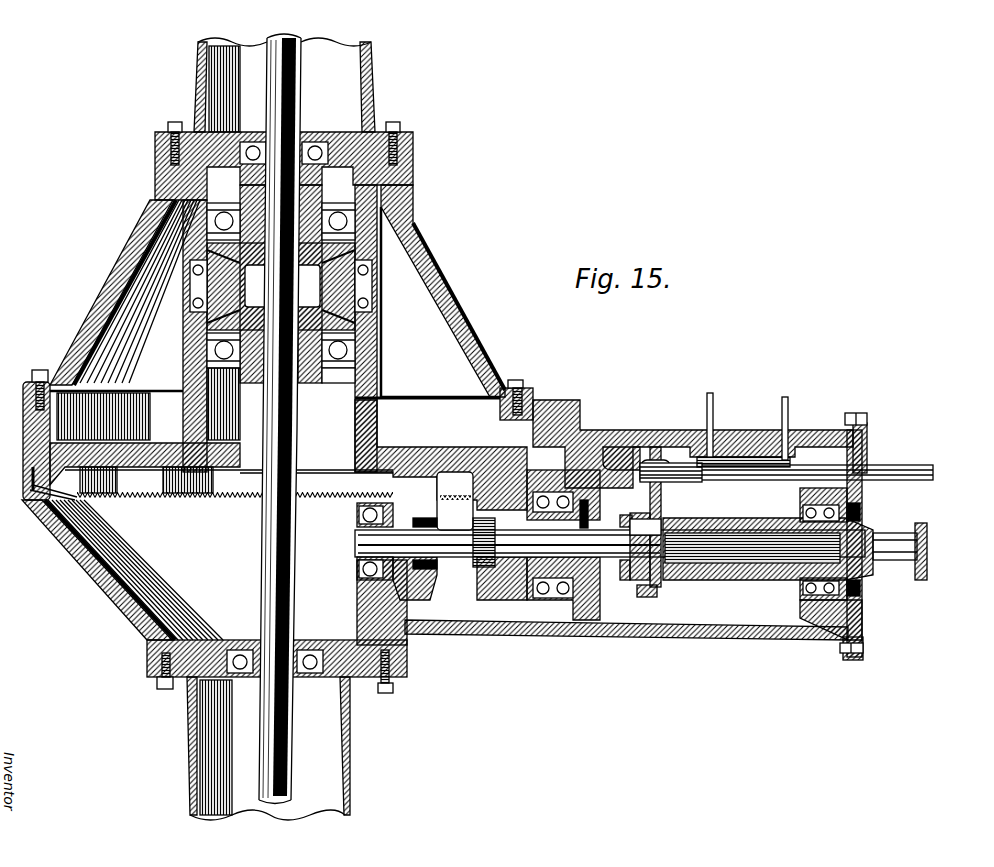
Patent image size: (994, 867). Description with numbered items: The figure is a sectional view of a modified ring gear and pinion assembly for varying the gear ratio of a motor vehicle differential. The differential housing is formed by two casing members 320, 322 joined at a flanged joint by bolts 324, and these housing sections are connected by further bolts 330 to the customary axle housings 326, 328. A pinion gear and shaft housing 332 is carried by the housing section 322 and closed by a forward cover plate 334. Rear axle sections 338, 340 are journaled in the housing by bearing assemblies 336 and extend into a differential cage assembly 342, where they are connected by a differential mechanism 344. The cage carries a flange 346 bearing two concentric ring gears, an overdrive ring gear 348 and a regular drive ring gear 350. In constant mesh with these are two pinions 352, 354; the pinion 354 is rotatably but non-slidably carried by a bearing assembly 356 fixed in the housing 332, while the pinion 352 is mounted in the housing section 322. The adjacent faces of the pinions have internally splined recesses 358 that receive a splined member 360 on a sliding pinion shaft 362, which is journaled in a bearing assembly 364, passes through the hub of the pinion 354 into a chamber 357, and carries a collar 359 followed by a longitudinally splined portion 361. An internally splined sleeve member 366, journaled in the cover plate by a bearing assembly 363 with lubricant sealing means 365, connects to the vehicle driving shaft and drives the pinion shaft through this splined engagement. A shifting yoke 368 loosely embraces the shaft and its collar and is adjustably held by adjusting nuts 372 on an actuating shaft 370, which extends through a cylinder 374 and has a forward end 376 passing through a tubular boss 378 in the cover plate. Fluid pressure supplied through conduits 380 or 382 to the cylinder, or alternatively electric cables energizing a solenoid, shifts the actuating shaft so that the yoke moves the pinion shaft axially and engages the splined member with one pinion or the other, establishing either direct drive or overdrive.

The casing member 320 is at (456, 298).
The casing member 322 is at (120, 603).
The bolts 324 is at (513, 387).
The axle housing 326 is at (372, 101).
The axle housing 328 is at (353, 760).
The bolts 330 is at (404, 122).
The pinion gear and shaft housing 332 is at (658, 632).
The forward cover plate 334 is at (858, 616).
The bearing assemblies 336 is at (262, 150).
The rear axle section 338 is at (300, 78).
The rear axle section 340 is at (287, 745).
The differential cage assembly 342 is at (383, 388).
The differential mechanism 344 is at (328, 294).
The flange 346 is at (423, 450).
The overdrive ring gear 348 is at (165, 466).
The regular drive ring gear 350 is at (53, 478).
The pinion 352 is at (428, 585).
The pinion 354 is at (518, 587).
The bearing assembly 356 is at (560, 595).
The chamber 357 is at (703, 623).
The recesses 358 is at (477, 563).
The collar 359 is at (644, 497).
The splined member 360 is at (480, 530).
The longitudinally splined portion 361 is at (720, 540).
The sliding pinion shaft 362 is at (362, 540).
The bearing assembly 363 is at (845, 620).
The bearing assembly 364 is at (358, 517).
The lubricant sealing means 365 is at (860, 511).
The sleeve member 366 is at (755, 508).
The shifting yoke 368 is at (630, 591).
The actuating shaft 370 is at (690, 481).
The adjusting nuts 372 is at (648, 457).
The cylinder 374 is at (740, 451).
The forward end 376 is at (897, 472).
The tubular boss 378 is at (870, 463).
The conduit 380 is at (790, 412).
The conduit 382 is at (713, 397).